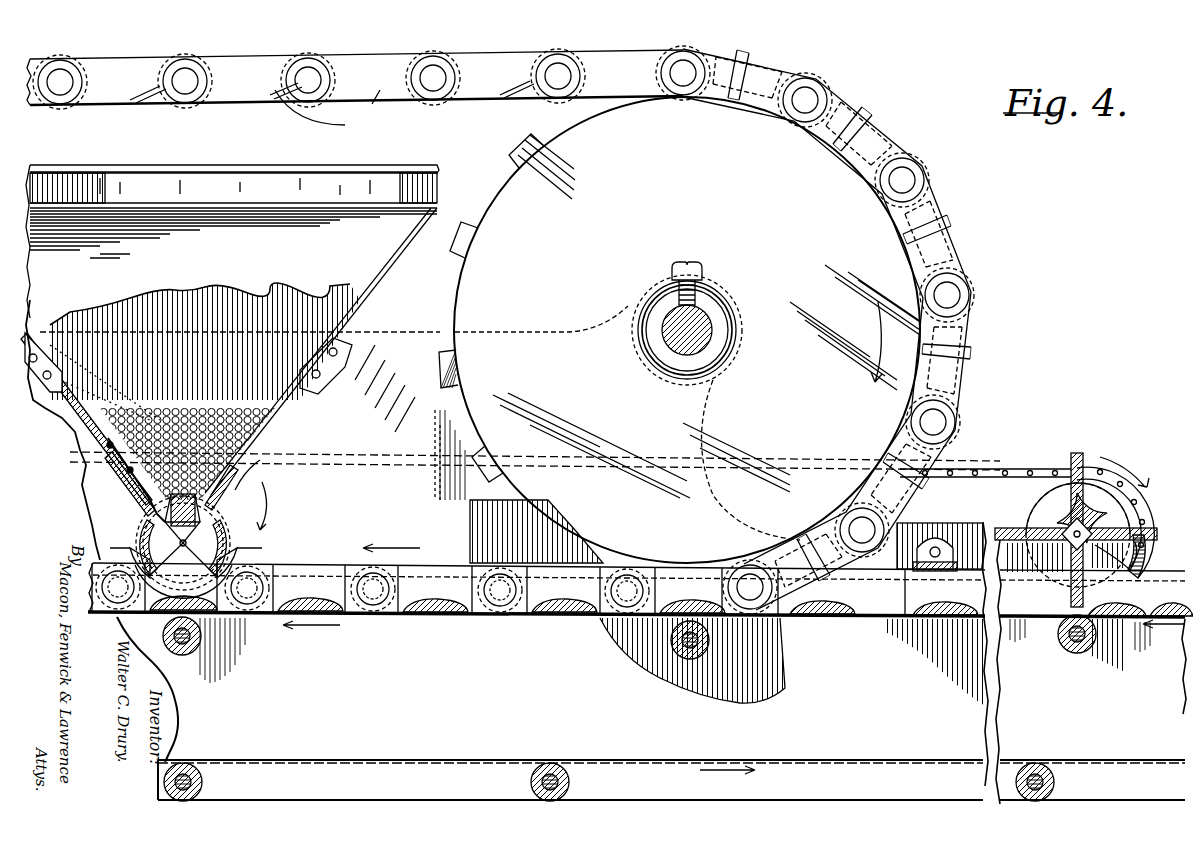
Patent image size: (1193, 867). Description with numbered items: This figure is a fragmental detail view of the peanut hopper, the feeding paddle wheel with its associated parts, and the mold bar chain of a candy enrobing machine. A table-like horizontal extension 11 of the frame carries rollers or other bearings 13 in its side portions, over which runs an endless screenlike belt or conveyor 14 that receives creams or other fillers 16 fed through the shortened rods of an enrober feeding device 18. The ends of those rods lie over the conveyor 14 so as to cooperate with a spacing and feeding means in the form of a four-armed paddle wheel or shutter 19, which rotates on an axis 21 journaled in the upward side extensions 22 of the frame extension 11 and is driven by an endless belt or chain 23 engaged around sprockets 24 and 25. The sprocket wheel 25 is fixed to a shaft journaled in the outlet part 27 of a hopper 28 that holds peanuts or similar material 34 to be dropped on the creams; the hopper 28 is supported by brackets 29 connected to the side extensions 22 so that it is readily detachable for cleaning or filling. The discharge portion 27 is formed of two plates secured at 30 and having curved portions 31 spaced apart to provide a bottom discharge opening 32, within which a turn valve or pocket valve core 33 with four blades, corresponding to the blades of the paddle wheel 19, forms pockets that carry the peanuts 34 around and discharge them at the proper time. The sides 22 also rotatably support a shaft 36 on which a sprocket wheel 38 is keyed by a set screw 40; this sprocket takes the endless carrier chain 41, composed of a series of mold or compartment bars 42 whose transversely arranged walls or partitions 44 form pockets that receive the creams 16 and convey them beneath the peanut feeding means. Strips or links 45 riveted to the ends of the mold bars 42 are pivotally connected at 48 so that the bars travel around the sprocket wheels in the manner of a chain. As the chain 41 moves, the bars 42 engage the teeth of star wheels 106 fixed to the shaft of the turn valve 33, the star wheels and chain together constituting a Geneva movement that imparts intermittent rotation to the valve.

The horizontal extension 11 is at (815, 731).
The rollers or bearings 13 is at (184, 656).
The endless belt or conveyor 14 is at (671, 744).
The creams or fillers 16 is at (200, 608).
The enrober feeding device 18 is at (890, 617).
The paddle wheel 19 is at (1089, 455).
The axis 21 is at (1120, 498).
The side extensions of frame 22 is at (606, 552).
The endless belt or chain 23 is at (978, 468).
The sprocket 24 is at (1032, 498).
The sprocket wheel 25 is at (240, 490).
The outlet part of hopper 27 is at (277, 505).
The hopper 28 is at (232, 330).
The brackets 29 is at (343, 336).
The plate securing points 30 is at (125, 454).
The curved portions 31 is at (140, 505).
The bottom discharge opening 32 is at (183, 548).
The turn valve 33 is at (150, 508).
The peanuts 34 is at (177, 420).
The shaft 36 is at (705, 326).
The sprocket wheel 38 is at (737, 163).
The set screw 40 is at (683, 262).
The endless carrier chain 41 is at (242, 59).
The mold bars 42 is at (478, 55).
The partitions 44 is at (446, 568).
The links 45 is at (327, 114).
The pivotal connection 48 is at (433, 78).
The star wheels 106 is at (201, 557).